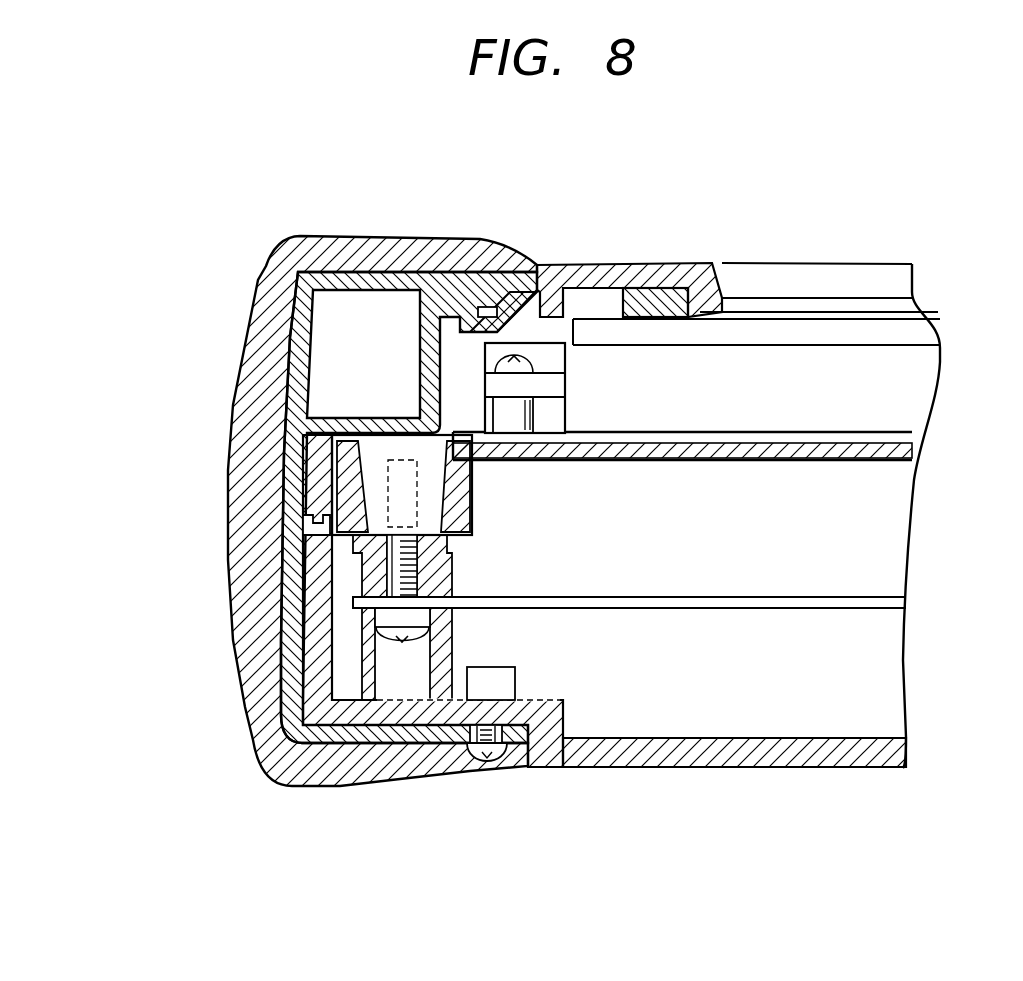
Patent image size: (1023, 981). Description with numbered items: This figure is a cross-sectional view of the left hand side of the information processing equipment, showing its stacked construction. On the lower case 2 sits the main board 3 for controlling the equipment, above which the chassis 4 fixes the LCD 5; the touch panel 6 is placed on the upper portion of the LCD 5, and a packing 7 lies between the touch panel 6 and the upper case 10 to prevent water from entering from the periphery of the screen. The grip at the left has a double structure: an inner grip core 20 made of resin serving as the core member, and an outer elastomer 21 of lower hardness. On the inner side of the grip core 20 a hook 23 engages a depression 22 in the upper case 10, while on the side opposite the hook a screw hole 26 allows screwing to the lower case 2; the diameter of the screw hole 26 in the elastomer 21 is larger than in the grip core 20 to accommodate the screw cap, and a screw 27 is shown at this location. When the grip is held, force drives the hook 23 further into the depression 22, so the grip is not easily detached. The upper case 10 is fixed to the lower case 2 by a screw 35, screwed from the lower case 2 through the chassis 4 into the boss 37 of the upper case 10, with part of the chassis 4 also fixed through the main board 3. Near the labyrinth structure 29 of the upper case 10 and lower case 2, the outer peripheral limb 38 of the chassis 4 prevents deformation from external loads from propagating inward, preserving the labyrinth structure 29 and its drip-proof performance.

The lower case 2 is at (707, 760).
The main board 3 is at (850, 606).
The chassis 4 is at (845, 450).
The LCD 5 is at (900, 398).
The touch panel 6 is at (853, 330).
The packing 7 is at (688, 283).
The upper case 10 is at (587, 270).
The grip core 20 is at (392, 273).
The elastomer 21 is at (287, 240).
The depression 22 is at (505, 345).
The hook 23 is at (490, 306).
The screw hole 26 is at (533, 735).
The screw 27 is at (473, 762).
The labyrinth structure 29 is at (318, 522).
The screw 35 is at (388, 645).
The boss 37 is at (387, 440).
The outer peripheral limb 38 is at (355, 470).